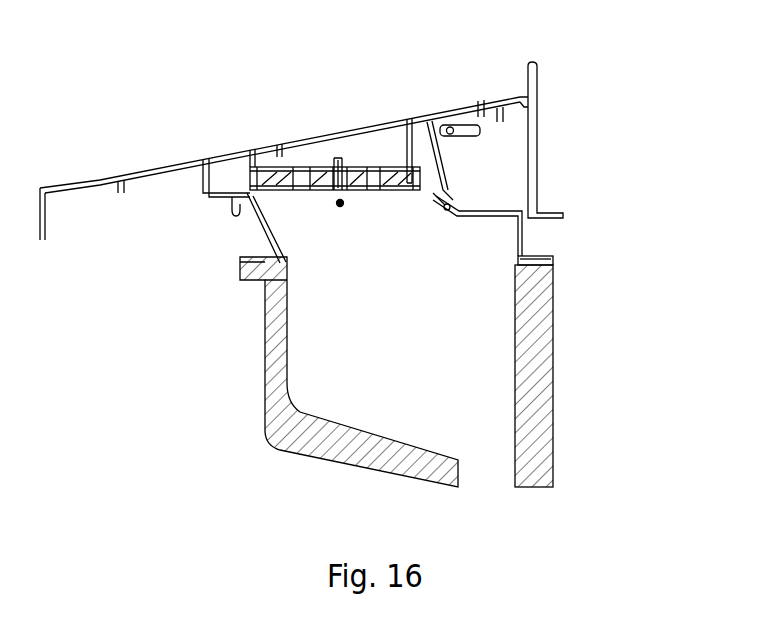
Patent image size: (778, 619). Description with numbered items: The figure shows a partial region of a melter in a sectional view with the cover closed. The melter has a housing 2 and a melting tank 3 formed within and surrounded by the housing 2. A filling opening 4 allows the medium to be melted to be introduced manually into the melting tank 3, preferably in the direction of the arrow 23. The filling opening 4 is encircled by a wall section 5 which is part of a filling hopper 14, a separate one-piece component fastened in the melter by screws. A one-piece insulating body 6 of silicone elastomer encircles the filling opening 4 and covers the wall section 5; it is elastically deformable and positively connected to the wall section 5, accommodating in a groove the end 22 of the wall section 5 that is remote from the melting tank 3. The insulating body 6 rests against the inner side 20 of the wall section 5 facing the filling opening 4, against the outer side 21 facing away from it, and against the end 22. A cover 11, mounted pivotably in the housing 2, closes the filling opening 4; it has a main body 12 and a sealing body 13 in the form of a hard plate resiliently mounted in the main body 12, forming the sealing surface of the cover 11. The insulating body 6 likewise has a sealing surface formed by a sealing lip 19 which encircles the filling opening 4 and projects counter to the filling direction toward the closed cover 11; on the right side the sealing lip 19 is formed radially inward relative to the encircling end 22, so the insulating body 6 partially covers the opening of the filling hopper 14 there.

The housing 2 is at (120, 172).
The melting tank 3 is at (283, 402).
The filling opening 4 is at (340, 203).
The wall section 5 is at (450, 204).
The insulating body 6 is at (219, 212).
The cover 11 is at (266, 101).
The main body 12 is at (317, 167).
The sealing body 13 is at (395, 193).
The filling hopper 14 is at (541, 241).
The sealing lip 19 is at (429, 196).
The inner side 20 is at (276, 238).
The outer side 21 is at (266, 241).
The end 22 is at (245, 192).
The arrow 23 is at (338, 106).